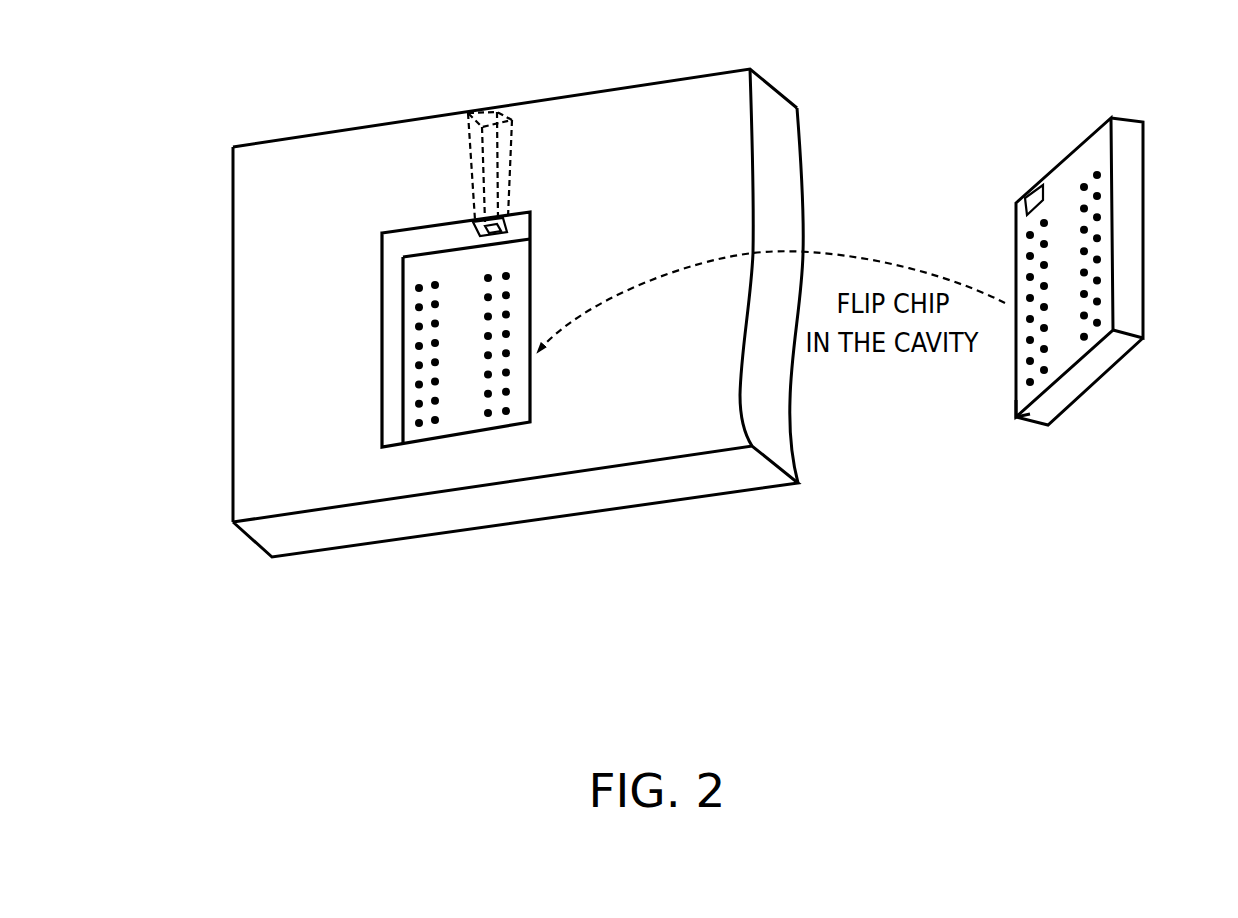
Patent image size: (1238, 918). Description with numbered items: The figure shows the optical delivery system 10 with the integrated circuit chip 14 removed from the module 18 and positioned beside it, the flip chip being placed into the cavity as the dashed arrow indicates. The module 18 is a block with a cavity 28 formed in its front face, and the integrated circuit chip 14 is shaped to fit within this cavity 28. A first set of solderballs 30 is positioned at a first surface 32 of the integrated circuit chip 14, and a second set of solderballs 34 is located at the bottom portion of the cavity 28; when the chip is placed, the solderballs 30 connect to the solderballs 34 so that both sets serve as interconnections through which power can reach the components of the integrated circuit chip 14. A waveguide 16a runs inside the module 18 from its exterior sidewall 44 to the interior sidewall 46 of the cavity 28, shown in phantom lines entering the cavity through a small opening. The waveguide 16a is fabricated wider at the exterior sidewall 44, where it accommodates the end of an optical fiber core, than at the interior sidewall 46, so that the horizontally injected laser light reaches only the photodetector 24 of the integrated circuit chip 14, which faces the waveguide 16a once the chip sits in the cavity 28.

The optical delivery system 10 is at (1170, 633).
The integrated circuit chip 14 is at (1145, 327).
The waveguide 16a is at (465, 158).
The module 18 is at (292, 532).
The photodetector 24 is at (1026, 190).
The cavity 28 is at (382, 318).
The first set of solderballs 30 is at (1052, 212).
The first surface 32 is at (1018, 420).
The second set of solderballs 34 is at (443, 400).
The exterior sidewall 44 is at (496, 108).
The interior sidewall 46 is at (477, 224).